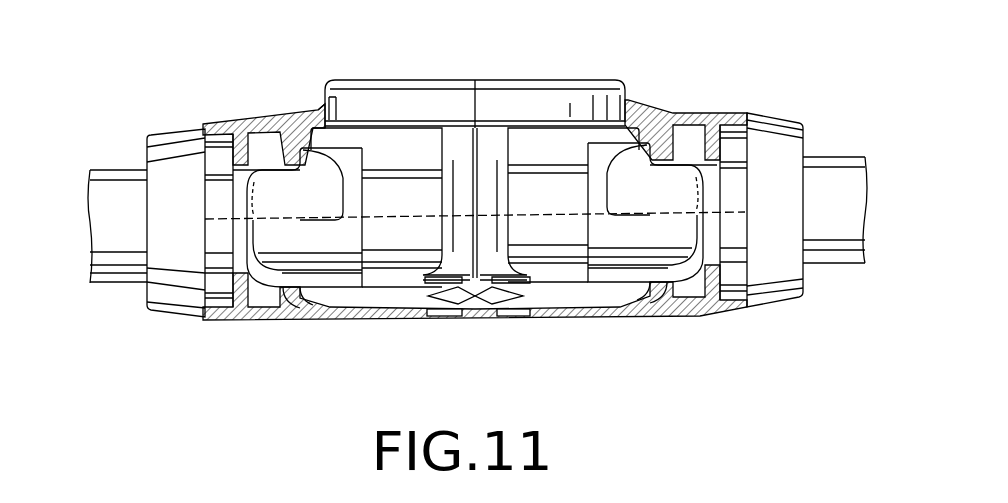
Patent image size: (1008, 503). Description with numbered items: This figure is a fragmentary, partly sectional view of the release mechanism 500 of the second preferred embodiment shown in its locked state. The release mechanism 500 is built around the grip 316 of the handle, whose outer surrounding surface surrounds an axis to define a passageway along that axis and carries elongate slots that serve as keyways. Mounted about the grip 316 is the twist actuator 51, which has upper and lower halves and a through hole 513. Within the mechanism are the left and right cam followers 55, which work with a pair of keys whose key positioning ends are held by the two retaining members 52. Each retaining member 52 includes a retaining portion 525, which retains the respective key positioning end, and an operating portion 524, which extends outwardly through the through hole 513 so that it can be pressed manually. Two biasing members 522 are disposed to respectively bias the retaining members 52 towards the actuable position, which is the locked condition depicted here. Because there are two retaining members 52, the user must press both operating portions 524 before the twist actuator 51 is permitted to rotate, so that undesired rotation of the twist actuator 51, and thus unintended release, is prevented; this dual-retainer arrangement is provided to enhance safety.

The release mechanism 500 is at (637, 88).
The twist actuator 51 is at (722, 313).
The grip 316 is at (846, 258).
The cam followers 55 is at (293, 232).
The retaining portion 525 is at (391, 277).
The operating portion 524 is at (508, 92).
The through hole 513 is at (330, 120).
The retaining members 52 is at (487, 168).
The biasing members 522 is at (447, 320).